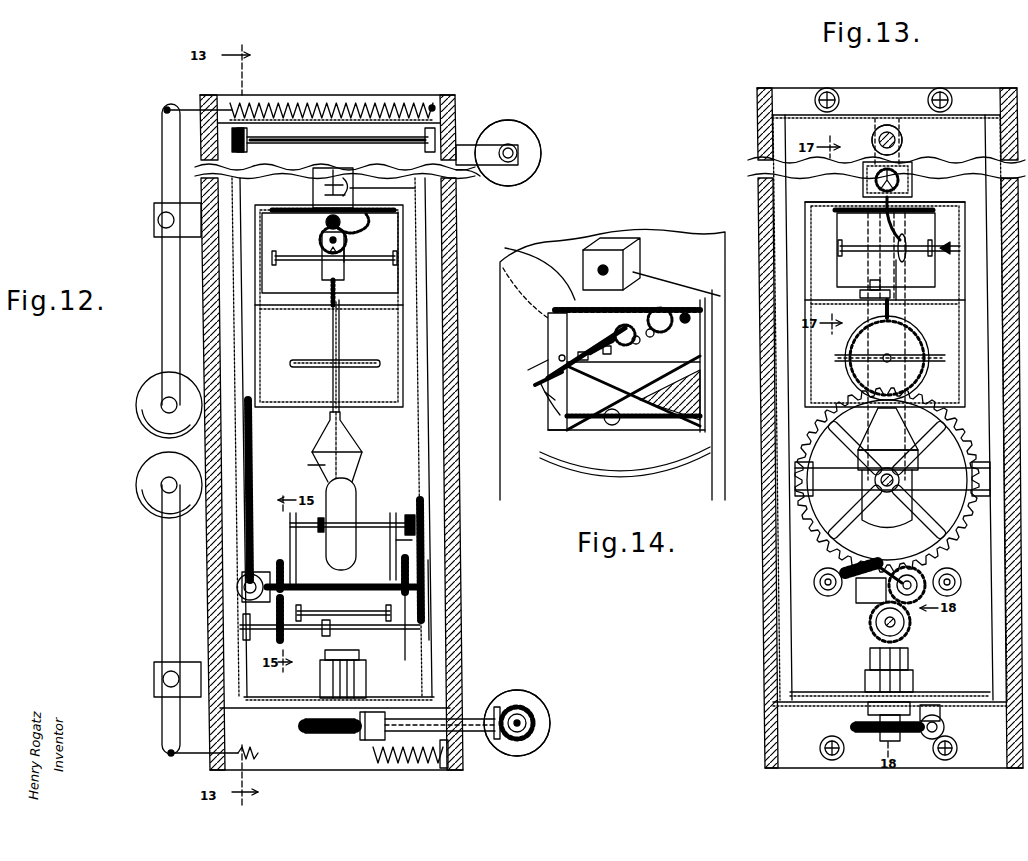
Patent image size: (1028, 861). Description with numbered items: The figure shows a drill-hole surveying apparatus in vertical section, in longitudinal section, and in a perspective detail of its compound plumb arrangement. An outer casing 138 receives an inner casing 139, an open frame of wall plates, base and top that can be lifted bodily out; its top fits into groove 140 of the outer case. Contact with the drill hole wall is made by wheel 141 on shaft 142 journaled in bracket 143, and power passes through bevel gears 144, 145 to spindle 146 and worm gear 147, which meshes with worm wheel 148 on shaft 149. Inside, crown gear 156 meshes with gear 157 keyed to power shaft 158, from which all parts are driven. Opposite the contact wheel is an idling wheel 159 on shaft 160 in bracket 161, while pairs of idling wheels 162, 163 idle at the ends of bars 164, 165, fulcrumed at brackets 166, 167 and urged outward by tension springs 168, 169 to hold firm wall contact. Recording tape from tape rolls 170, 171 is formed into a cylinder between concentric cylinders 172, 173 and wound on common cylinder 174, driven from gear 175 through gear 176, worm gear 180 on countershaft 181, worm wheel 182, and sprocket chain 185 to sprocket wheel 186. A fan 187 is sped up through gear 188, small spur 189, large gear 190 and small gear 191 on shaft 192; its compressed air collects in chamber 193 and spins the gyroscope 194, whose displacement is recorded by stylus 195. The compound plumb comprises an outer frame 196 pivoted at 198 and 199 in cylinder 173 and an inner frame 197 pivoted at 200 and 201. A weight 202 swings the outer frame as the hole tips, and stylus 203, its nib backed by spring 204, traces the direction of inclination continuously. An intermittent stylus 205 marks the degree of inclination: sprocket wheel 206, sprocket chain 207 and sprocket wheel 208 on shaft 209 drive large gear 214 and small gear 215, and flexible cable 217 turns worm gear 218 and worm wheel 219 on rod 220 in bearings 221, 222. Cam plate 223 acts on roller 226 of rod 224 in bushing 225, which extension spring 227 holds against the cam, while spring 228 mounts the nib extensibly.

In FIG. 12, the outer casing 138 is at (457, 212).
In FIG. 13, the outer casing 138 is at (758, 190).
In FIG. 12, the inner casing 139 is at (450, 234).
In FIG. 13, the inner casing 139 is at (790, 215).
In FIG. 13, the groove 140 is at (757, 110).
In FIG. 12, the contact wheel 141 is at (550, 716).
In FIG. 12, the shaft 142 is at (533, 738).
In FIG. 12, the bracket 143 is at (480, 735).
In FIG. 12, the bevel gear 144 is at (517, 708).
In FIG. 12, the bevel gear 145 is at (497, 708).
In FIG. 12, the spindle 146 is at (408, 746).
In FIG. 12, the worm gear 147 is at (333, 734).
In FIG. 13, the worm gear 147 is at (944, 724).
In FIG. 13, the worm wheel 148 is at (866, 734).
In FIG. 13, the shaft 149 is at (892, 741).
In FIG. 12, the crown gear 156 is at (366, 668).
In FIG. 13, the crown gear 156 is at (889, 681).
In FIG. 12, the gear 157 is at (325, 653).
In FIG. 12, the power shaft 158 is at (370, 630).
In FIG. 12, the idling wheel 159 is at (530, 128).
In FIG. 12, the shaft 160 is at (540, 158).
In FIG. 12, the bracket 161 is at (480, 144).
In FIG. 12, the idling wheels 162 is at (138, 396).
In FIG. 12, the idling wheels 163 is at (139, 478).
In FIG. 12, the bar 164 is at (161, 283).
In FIG. 12, the bar 165 is at (161, 558).
In FIG. 12, the bracket 166 is at (154, 218).
In FIG. 12, the bracket 167 is at (154, 676).
In FIG. 12, the tension spring 168 is at (360, 104).
In FIG. 13, the tension spring 168 is at (946, 92).
In FIG. 12, the tension spring 169 is at (390, 763).
In FIG. 13, the tension spring 169 is at (832, 761).
In FIG. 13, the tape roll 170 is at (824, 598).
In FIG. 13, the tape roll 171 is at (952, 594).
In FIG. 13, the concentric cylinder 172 is at (818, 205).
In FIG. 13, the concentric cylinder 173 is at (810, 212).
In FIG. 12, the common cylinder 174 is at (273, 136).
In FIG. 13, the common cylinder 174 is at (890, 124).
In FIG. 12, the gear 175 is at (278, 624).
In FIG. 13, the gear 175 is at (910, 628).
In FIG. 12, the gear 176 is at (284, 574).
In FIG. 13, the gear 176 is at (918, 600).
In FIG. 13, the worm gear 180 is at (853, 582).
In FIG. 12, the countershaft 181 is at (237, 594).
In FIG. 12, the worm wheel 182 is at (253, 448).
In FIG. 13, the worm wheel 182 is at (797, 520).
In FIG. 13, the sprocket chain 185 is at (904, 150).
In FIG. 12, the sprocket wheel 186 is at (232, 140).
In FIG. 13, the sprocket wheel 186 is at (872, 140).
In FIG. 12, the fan 187 is at (352, 492).
In FIG. 12, the gear 188 is at (405, 660).
In FIG. 12, the small spur 189 is at (401, 566).
In FIG. 12, the large gear 190 is at (396, 540).
In FIG. 12, the small gear 191 is at (408, 514).
In FIG. 12, the shaft 192 is at (372, 518).
In FIG. 12, the chamber 193 is at (352, 440).
In FIG. 13, the chamber 193 is at (892, 468).
In FIG. 12, the gyroscope 194 is at (341, 352).
In FIG. 13, the gyroscope 194 is at (915, 332).
In FIG. 13, the stylus 195 is at (948, 358).
In FIG. 12, the outer frame 196 is at (340, 295).
In FIG. 14, the outer frame 196 is at (644, 424).
In FIG. 13, the outer frame 196 is at (893, 296).
In FIG. 14, the inner frame 197 is at (567, 430).
In FIG. 13, the inner frame 197 is at (910, 285).
In FIG. 12, the pivot 198 is at (325, 176).
In FIG. 12, the pivot 199 is at (308, 306).
In FIG. 14, the pivot 199 is at (610, 424).
In FIG. 13, the pivot 199 is at (886, 346).
In FIG. 12, the pivot 200 is at (360, 253).
In FIG. 14, the pivot 200 is at (698, 358).
In FIG. 12, the pivot 201 is at (290, 254).
In FIG. 12, the weight 202 is at (362, 305).
In FIG. 14, the weight 202 is at (665, 431).
In FIG. 13, the weight 202 is at (866, 296).
In FIG. 12, the stylus 203 is at (325, 254).
In FIG. 14, the stylus 203 is at (540, 384).
In FIG. 14, the spring 204 is at (540, 372).
In FIG. 12, the intermittent stylus 205 is at (344, 258).
In FIG. 14, the intermittent stylus 205 is at (548, 396).
In FIG. 12, the sprocket wheel 206 is at (432, 632).
In FIG. 12, the sprocket chain 207 is at (425, 525).
In FIG. 12, the sprocket wheel 208 is at (470, 176).
In FIG. 12, the shaft 209 is at (370, 189).
In FIG. 14, the shaft 209 is at (683, 283).
In FIG. 12, the large gear 214 is at (310, 208).
In FIG. 14, the large gear 214 is at (606, 310).
In FIG. 13, the large gear 214 is at (858, 208).
In FIG. 14, the small gear 215 is at (690, 316).
In FIG. 13, the small gear 215 is at (885, 215).
In FIG. 14, the flexible cable 217 is at (668, 328).
In FIG. 12, the worm gear 218 is at (330, 223).
In FIG. 12, the worm wheel 219 is at (346, 239).
In FIG. 14, the worm wheel 219 is at (618, 328).
In FIG. 14, the rod 220 is at (586, 353).
In FIG. 14, the bearing 221 is at (560, 344).
In FIG. 13, the bearing 221 is at (942, 244).
In FIG. 13, the bearing 222 is at (840, 248).
In FIG. 14, the cam plate 223 is at (660, 341).
In FIG. 14, the rod 224 is at (613, 352).
In FIG. 14, the bushing 225 is at (595, 364).
In FIG. 14, the roller 226 is at (644, 348).
In FIG. 13, the roller 226 is at (895, 252).
In FIG. 14, the extension spring 227 is at (619, 361).
In FIG. 14, the spring 228 is at (552, 410).